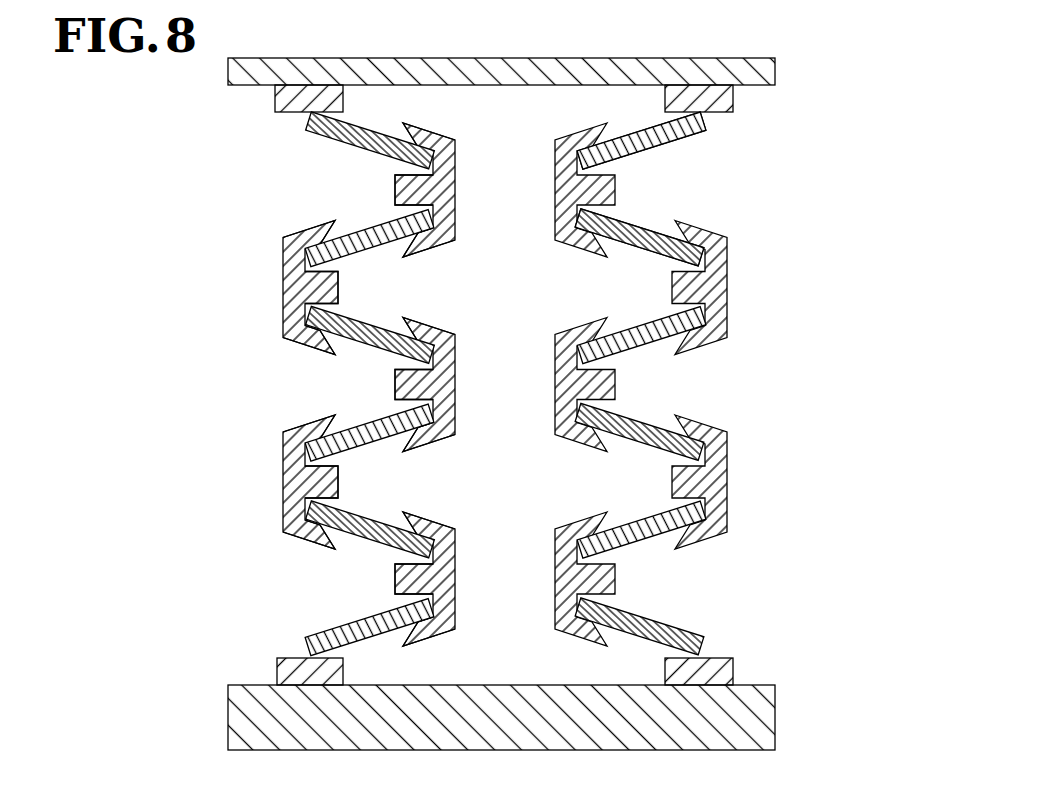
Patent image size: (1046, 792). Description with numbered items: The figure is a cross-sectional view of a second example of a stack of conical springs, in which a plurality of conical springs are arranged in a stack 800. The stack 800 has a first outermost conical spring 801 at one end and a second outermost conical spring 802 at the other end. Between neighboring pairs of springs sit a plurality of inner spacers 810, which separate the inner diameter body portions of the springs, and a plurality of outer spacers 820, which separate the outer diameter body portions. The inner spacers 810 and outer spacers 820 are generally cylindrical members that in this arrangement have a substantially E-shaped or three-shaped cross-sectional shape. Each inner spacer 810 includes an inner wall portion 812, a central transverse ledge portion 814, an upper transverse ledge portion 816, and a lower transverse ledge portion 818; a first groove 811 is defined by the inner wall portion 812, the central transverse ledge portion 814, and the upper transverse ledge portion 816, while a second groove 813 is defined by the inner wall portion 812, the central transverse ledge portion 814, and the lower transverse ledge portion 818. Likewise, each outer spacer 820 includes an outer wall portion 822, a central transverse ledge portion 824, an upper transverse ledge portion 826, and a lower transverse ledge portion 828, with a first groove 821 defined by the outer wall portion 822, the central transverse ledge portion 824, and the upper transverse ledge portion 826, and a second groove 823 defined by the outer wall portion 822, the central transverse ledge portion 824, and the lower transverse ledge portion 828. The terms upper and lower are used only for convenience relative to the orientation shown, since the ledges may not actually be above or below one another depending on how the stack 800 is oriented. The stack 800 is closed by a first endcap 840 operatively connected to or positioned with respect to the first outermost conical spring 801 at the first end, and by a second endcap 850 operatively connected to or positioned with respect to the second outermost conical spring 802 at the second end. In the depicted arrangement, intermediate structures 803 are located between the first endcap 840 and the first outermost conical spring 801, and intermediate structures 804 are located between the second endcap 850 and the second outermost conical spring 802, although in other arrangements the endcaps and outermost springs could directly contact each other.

The stack 800 is at (810, 396).
The first outermost conical spring 801 is at (698, 135).
The second outermost conical spring 802 is at (690, 633).
The intermediate structures 803 is at (290, 100).
The intermediate structures 804 is at (285, 680).
The inner spacers 810 is at (422, 385).
The first groove 811 is at (617, 168).
The inner wall portion 812 is at (447, 187).
The second groove 813 is at (618, 213).
The central transverse ledge portion 814 is at (410, 192).
The upper transverse ledge portion 816 is at (424, 130).
The lower transverse ledge portion 818 is at (434, 247).
The outer spacers 820 is at (289, 385).
The first groove 821 is at (660, 262).
The outer wall portion 822 is at (290, 300).
The second groove 823 is at (662, 311).
The central transverse ledge portion 824 is at (318, 290).
The upper transverse ledge portion 826 is at (316, 236).
The lower transverse ledge portion 828 is at (290, 340).
The first endcap 840 is at (664, 58).
The second endcap 850 is at (760, 718).